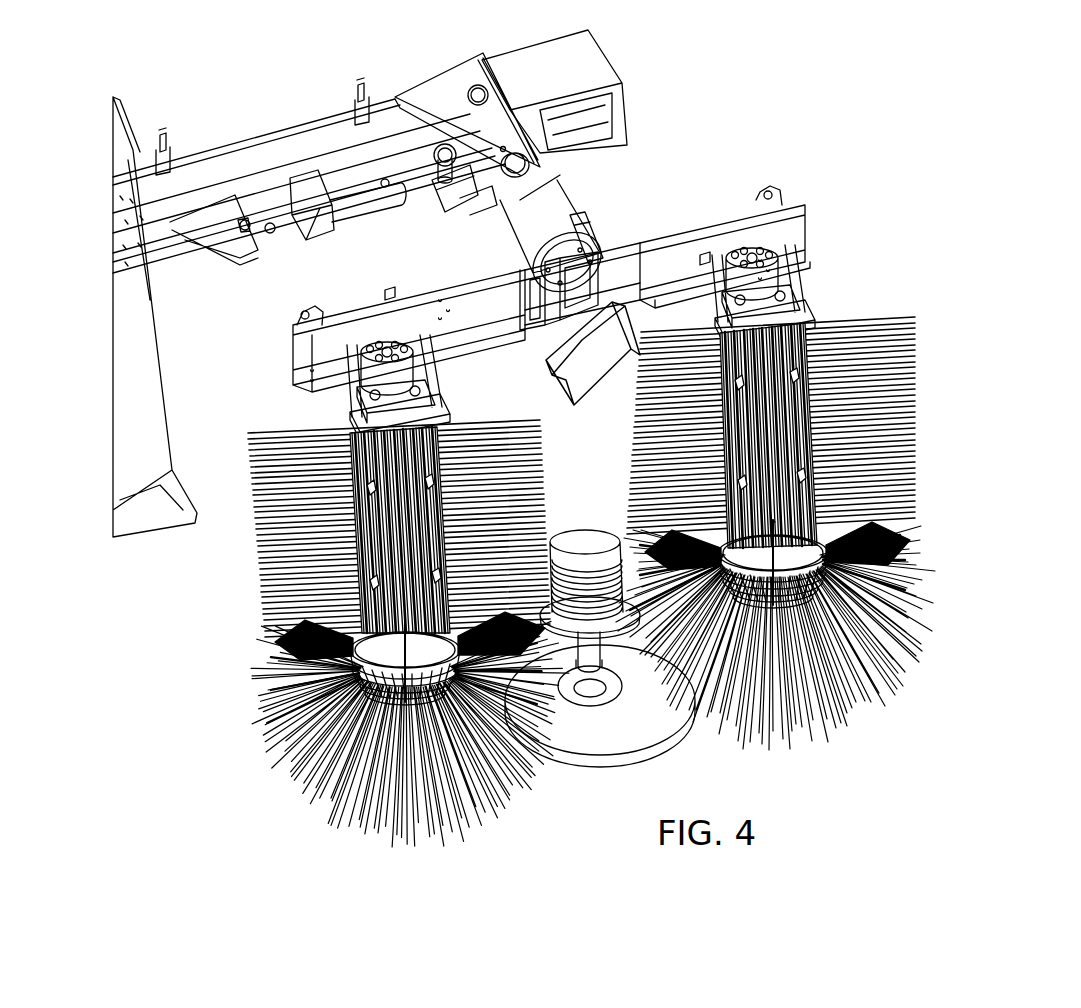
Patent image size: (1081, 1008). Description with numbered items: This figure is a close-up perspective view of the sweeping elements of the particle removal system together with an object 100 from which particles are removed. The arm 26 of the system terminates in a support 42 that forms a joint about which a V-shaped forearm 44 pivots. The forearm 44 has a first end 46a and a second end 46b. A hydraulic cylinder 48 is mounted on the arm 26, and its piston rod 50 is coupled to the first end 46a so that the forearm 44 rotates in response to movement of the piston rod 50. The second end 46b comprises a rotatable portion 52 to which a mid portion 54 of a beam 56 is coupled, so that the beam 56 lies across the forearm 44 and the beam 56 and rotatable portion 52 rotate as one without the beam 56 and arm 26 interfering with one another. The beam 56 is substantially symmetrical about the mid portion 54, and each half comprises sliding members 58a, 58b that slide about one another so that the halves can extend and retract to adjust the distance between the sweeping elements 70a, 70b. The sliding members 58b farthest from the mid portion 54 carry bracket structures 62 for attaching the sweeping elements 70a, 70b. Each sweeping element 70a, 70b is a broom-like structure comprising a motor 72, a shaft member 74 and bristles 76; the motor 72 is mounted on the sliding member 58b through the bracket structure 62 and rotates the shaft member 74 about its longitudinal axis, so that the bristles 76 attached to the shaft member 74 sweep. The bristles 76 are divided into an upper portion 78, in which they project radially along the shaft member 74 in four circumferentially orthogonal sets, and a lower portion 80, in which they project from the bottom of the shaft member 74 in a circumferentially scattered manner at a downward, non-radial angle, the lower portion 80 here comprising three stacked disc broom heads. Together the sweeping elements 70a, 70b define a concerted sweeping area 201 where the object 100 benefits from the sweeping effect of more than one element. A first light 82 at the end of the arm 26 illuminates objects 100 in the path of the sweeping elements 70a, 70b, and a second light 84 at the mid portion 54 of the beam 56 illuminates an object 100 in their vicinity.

The arm 26 is at (309, 286).
The support 42 is at (449, 88).
The V-shaped forearm 44 is at (470, 192).
The first end of forearm 46a is at (448, 150).
The second end of forearm 46b is at (560, 238).
The hydraulic cylinder 48 is at (357, 213).
The piston rod 50 is at (413, 200).
The rotatable portion 52 is at (542, 210).
The mid portion of beam 54 is at (533, 328).
The beam 56 is at (649, 218).
The sliding member 58a is at (640, 295).
The sliding member 58b is at (800, 212).
The bracket structure 62 is at (803, 310).
The motor 72 is at (776, 280).
The shaft member 74 is at (800, 428).
The bristles 76 is at (915, 505).
The upper portion 78 is at (639, 468).
The lower portion 80 is at (834, 638).
The first light 82 is at (601, 68).
The second light 84 is at (590, 375).
The sweeping element 70a is at (352, 734).
The sweeping element 70b is at (871, 655).
The object 100 is at (600, 687).
The concerted sweeping area 201 is at (603, 501).